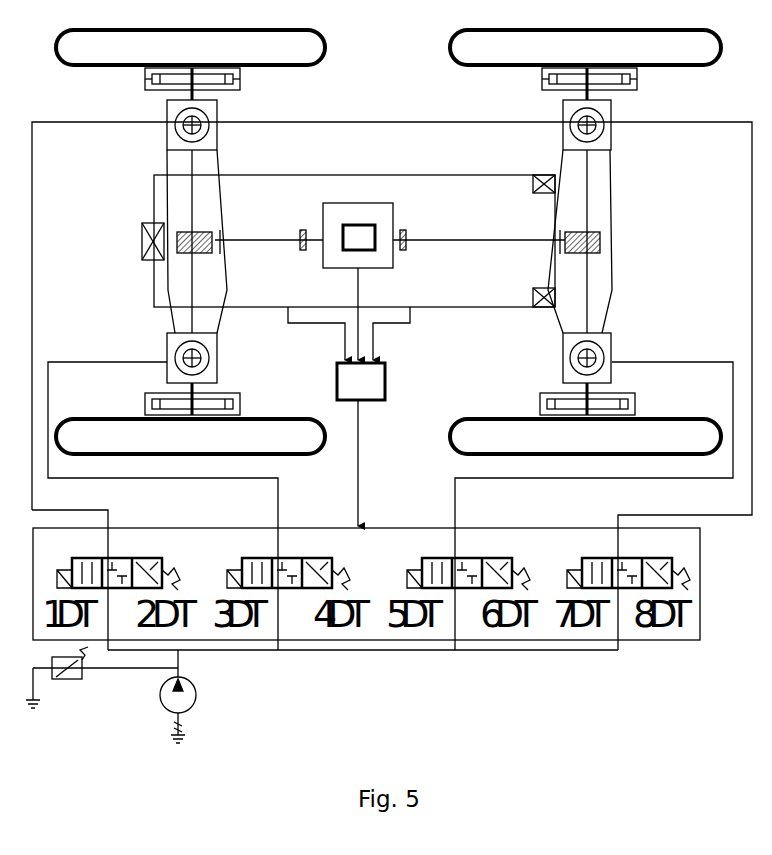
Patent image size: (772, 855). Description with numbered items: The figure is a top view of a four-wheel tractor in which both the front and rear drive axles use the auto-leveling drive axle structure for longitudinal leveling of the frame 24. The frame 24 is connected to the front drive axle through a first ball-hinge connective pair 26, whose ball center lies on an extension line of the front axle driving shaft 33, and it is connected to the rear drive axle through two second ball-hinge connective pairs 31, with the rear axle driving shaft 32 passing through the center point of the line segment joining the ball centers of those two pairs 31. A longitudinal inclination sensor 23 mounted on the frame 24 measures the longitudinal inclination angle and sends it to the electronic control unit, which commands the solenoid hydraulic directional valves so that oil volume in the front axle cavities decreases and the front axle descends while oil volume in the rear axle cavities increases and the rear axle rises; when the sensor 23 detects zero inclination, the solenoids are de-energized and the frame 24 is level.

The longitudinal inclination sensor 23 is at (358, 203).
The frame 24 is at (292, 175).
The first ball-hinge connective pair 26 is at (145, 228).
The second ball-hinge connective pair 31 is at (542, 290).
The rear axle driving shaft 32 is at (452, 240).
The front axle driving shaft 33 is at (247, 240).